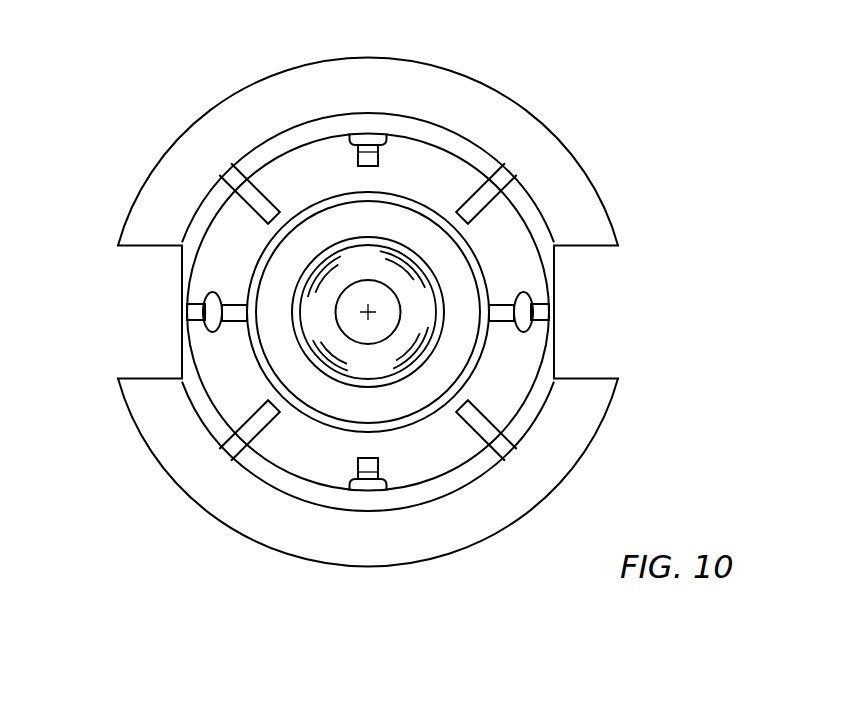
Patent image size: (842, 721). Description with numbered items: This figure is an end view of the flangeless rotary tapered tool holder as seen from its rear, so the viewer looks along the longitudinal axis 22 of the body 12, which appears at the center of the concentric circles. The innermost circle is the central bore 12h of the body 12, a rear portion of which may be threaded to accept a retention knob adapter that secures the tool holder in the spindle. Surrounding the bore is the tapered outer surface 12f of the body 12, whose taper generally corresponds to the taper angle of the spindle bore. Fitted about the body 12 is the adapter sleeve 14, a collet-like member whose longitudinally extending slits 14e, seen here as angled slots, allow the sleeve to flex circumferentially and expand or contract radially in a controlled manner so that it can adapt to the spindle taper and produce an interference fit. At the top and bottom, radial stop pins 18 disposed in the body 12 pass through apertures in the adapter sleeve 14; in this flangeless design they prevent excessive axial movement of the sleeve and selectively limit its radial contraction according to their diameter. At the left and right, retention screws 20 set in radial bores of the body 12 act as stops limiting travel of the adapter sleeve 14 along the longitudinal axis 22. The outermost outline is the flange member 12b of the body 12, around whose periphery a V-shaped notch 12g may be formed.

The body 12 is at (400, 222).
The flange member 12b is at (430, 78).
The tapered outer surface 12f is at (328, 220).
The V-shaped notch 12g is at (255, 157).
The central bore 12h is at (340, 296).
The adapter sleeve 14 is at (500, 228).
The slit 14e is at (493, 425).
The radial stop pin 18 is at (368, 133).
The retention screw 20 is at (210, 312).
The longitudinal axis 22 is at (368, 312).